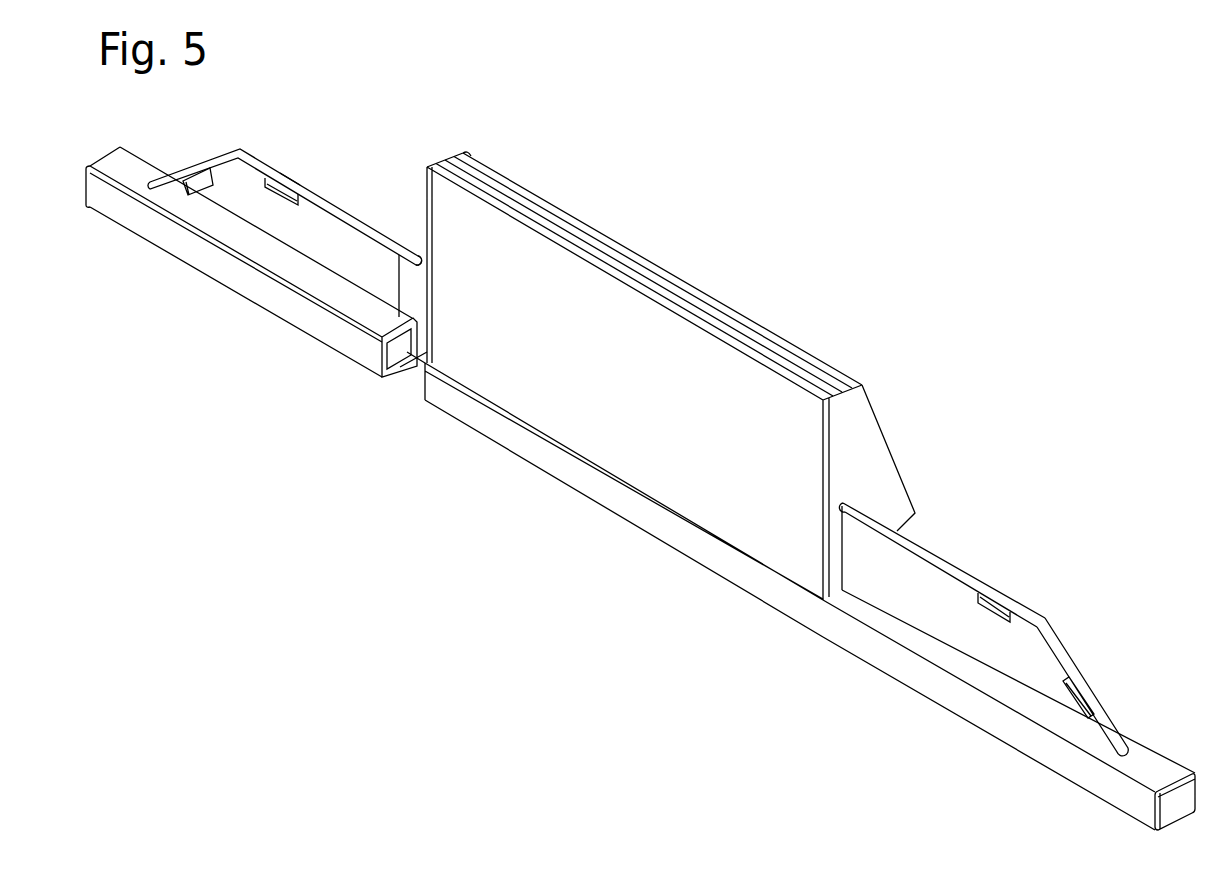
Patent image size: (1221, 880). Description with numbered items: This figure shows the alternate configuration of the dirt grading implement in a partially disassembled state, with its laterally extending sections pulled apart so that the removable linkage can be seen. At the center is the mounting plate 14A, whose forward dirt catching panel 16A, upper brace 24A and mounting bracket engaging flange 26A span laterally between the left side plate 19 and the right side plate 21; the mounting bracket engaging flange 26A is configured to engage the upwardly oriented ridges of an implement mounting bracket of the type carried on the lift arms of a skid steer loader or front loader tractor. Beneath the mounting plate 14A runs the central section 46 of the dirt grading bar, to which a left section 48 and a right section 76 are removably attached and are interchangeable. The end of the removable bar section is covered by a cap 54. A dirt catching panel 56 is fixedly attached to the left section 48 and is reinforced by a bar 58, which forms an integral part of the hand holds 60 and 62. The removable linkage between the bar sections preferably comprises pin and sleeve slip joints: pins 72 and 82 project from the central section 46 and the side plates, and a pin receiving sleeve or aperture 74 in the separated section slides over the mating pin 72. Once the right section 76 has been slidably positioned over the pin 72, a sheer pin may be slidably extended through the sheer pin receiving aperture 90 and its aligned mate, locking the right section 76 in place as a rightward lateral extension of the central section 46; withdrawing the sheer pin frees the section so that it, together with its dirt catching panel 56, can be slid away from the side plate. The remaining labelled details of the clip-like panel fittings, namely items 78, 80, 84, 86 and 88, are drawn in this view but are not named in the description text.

The mounting plate 14A is at (777, 284).
The forward dirt catching panel 16A is at (552, 372).
The left side plate 19 is at (862, 445).
The right side plate 21 is at (465, 155).
The upper brace 24A is at (530, 218).
The mounting bracket engaging flange 26A is at (622, 250).
The central section 46 is at (583, 475).
The left section 48 is at (895, 655).
The cap 54 is at (1172, 778).
The left dirt catching panel 56 is at (963, 598).
The bar 58 is at (937, 560).
The hand hold 60 is at (990, 602).
The hand hold 62 is at (1078, 688).
The pin 72 is at (413, 370).
The pin receiving sleeve 74 is at (382, 336).
The right section 76 is at (245, 288).
The bar end 78 is at (100, 160).
The tab 80 is at (270, 178).
The pin 82 is at (416, 250).
The clip rod 84 is at (313, 238).
The tab 86 is at (192, 185).
The rod bend 88 is at (292, 165).
The sheer pin receiving aperture 90 is at (385, 355).